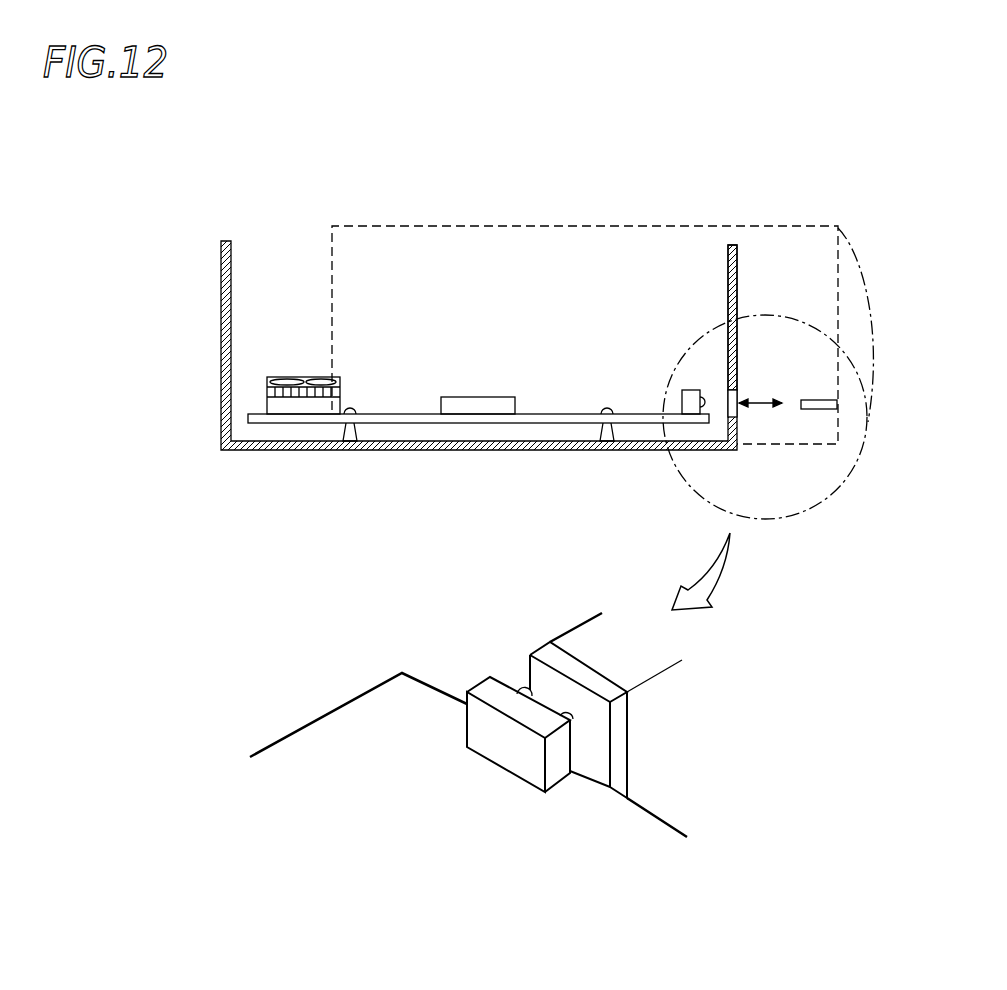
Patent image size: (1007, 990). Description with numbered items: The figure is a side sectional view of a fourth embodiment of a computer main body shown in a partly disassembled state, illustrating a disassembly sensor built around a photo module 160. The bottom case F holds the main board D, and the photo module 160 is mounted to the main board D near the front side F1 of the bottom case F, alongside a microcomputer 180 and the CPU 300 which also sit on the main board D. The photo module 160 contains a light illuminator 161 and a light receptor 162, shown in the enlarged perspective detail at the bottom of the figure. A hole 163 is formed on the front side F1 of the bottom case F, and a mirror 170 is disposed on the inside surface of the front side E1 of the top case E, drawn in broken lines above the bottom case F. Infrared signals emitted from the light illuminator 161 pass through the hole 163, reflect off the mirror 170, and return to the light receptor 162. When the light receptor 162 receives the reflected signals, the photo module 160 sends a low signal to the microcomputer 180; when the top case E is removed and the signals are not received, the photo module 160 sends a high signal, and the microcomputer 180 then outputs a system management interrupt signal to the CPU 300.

The bottom case F is at (221, 400).
The front side of the bottom case F1 is at (737, 252).
The top case E is at (592, 226).
The front side of the top case E1 is at (839, 274).
The main board D is at (467, 424).
The CPU 300 is at (334, 405).
The microcomputer 180 is at (490, 396).
The photo module 160 is at (692, 390).
The light illuminator 161 is at (568, 707).
The light receptor 162 is at (522, 685).
The hole 163 is at (737, 418).
The mirror 170 is at (820, 400).